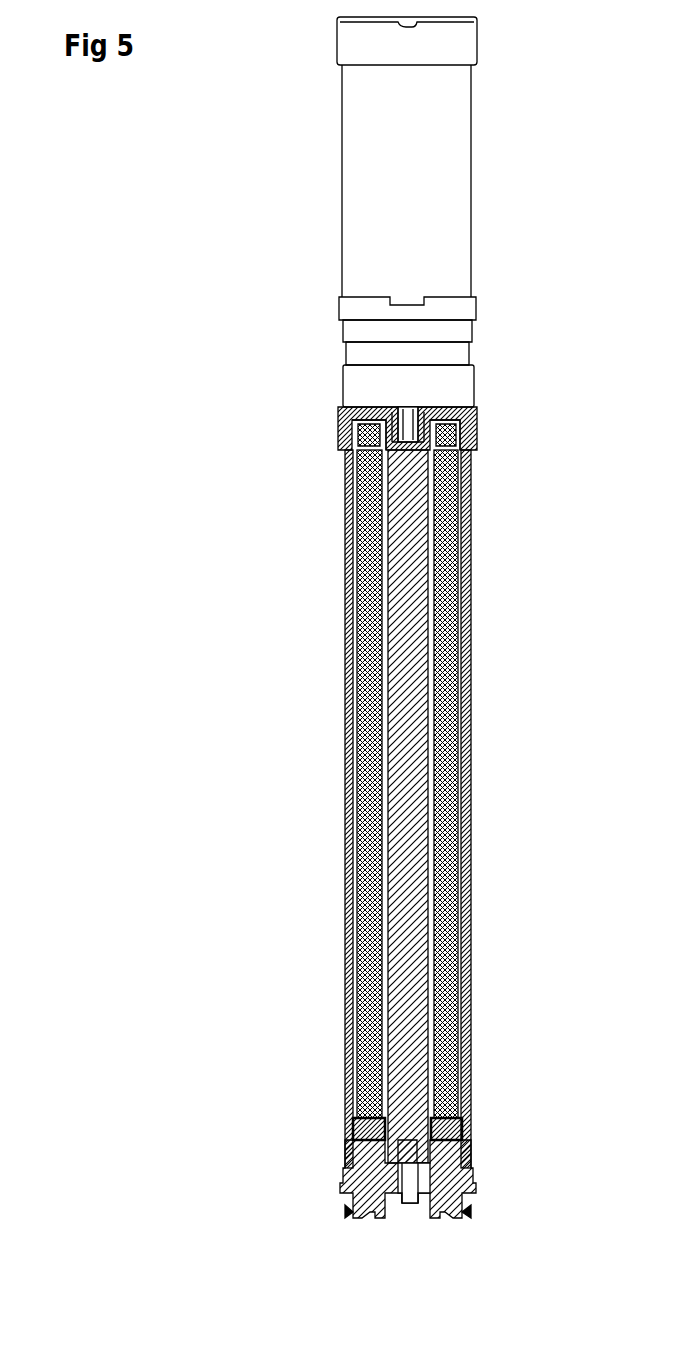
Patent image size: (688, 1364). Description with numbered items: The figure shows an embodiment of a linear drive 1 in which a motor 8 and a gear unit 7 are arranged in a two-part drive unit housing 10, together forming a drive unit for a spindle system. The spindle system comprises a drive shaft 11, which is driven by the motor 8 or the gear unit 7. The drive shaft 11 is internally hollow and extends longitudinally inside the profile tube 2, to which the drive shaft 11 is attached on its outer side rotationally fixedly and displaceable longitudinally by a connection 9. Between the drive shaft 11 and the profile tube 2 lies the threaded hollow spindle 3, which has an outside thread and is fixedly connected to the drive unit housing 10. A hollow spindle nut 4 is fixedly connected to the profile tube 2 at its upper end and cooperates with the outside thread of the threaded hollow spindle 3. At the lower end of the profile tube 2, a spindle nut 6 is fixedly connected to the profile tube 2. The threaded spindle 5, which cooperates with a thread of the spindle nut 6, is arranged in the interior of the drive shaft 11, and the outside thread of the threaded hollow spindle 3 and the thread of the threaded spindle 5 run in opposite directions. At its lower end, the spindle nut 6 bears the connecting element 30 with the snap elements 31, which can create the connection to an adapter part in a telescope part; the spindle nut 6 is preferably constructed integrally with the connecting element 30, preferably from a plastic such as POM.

The linear drive 1 is at (305, 50).
The profile tube 2 is at (343, 578).
The threaded hollow spindle 3 is at (470, 592).
The hollow spindle nut 4 is at (352, 458).
The threaded spindle 5 is at (440, 504).
The spindle nut 6 is at (350, 1168).
The gear unit 7 is at (455, 384).
The motor 8 is at (457, 170).
The connection 9 is at (471, 1128).
The drive unit housing 10 is at (507, 125).
The drive shaft 11 is at (407, 411).
The connecting element 30 is at (491, 1198).
The snap elements 31 is at (376, 1222).